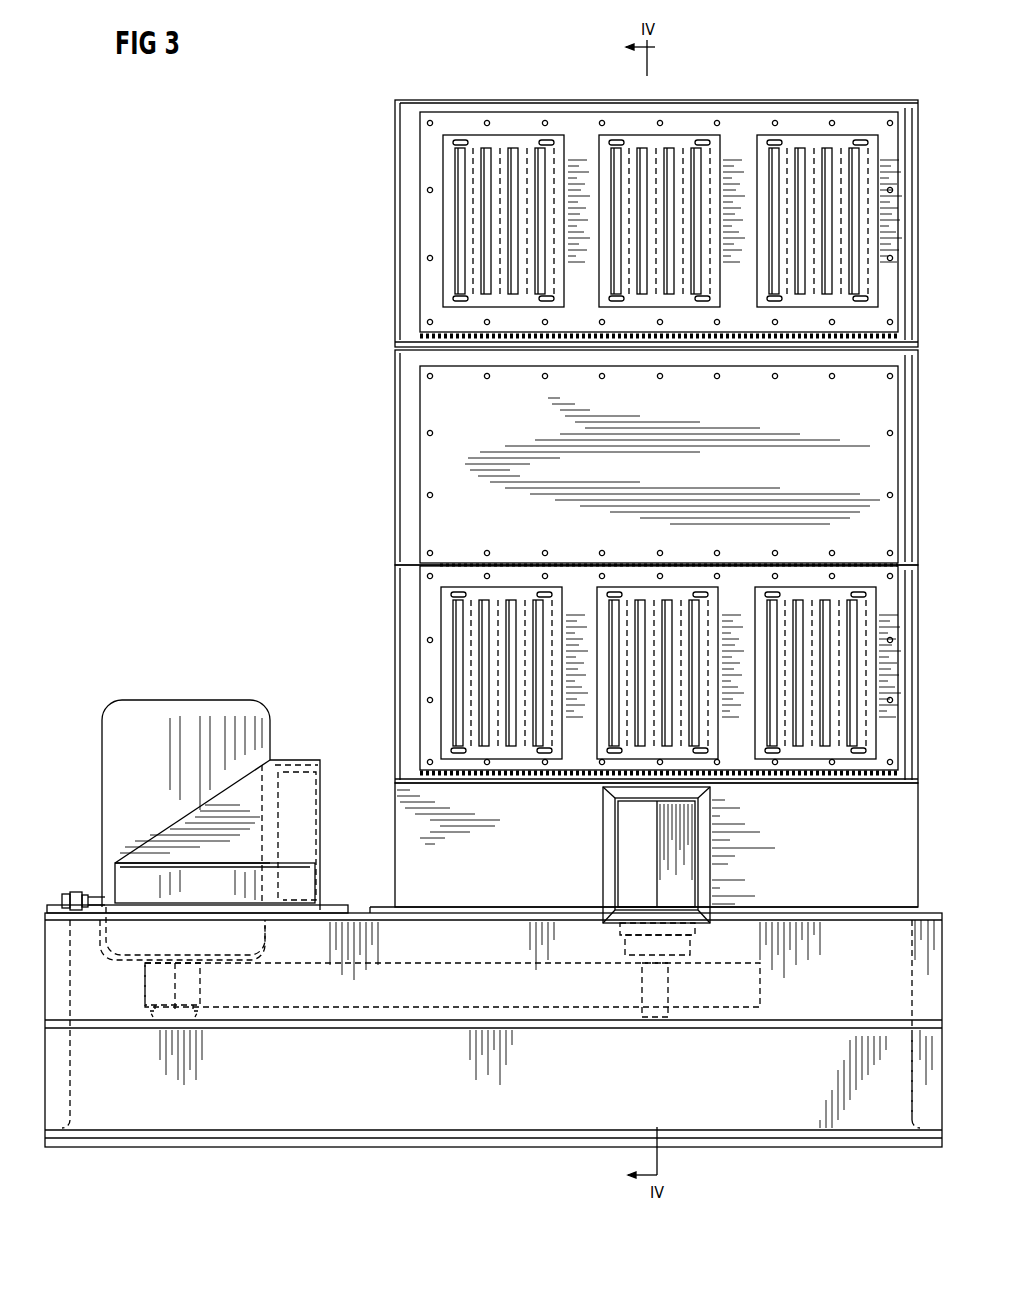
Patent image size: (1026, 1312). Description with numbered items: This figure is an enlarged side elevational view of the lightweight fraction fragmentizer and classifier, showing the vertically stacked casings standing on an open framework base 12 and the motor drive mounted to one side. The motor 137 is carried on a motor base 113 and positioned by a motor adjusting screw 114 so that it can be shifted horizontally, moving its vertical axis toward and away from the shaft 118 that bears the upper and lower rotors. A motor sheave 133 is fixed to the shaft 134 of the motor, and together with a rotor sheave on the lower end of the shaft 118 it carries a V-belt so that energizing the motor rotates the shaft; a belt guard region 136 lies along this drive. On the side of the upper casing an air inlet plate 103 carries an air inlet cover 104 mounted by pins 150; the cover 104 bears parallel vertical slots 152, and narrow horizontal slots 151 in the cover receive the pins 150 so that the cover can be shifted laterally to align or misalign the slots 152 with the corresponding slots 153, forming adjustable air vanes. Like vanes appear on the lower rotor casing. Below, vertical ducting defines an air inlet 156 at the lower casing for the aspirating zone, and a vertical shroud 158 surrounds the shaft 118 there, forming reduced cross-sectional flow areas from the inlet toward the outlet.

The base frame 12 is at (42, 934).
The air inlet plate 103 is at (880, 122).
The air inlet cover 104 is at (754, 146).
The motor base 113 is at (336, 906).
The motor adjusting screw 114 is at (92, 902).
The shaft 118 is at (650, 996).
The motor sheave 133 is at (156, 1028).
The shaft of the motor 134 is at (207, 1028).
The duct 136 is at (318, 1000).
The motor 137 is at (220, 710).
The pins 150 is at (726, 316).
The narrow horizontal slots 151 is at (610, 323).
The parallel vertical slots 152 is at (488, 152).
The slots of the air inlet cover 153 is at (464, 152).
The air inlet 156 is at (708, 881).
The vertical shroud 158 is at (678, 840).